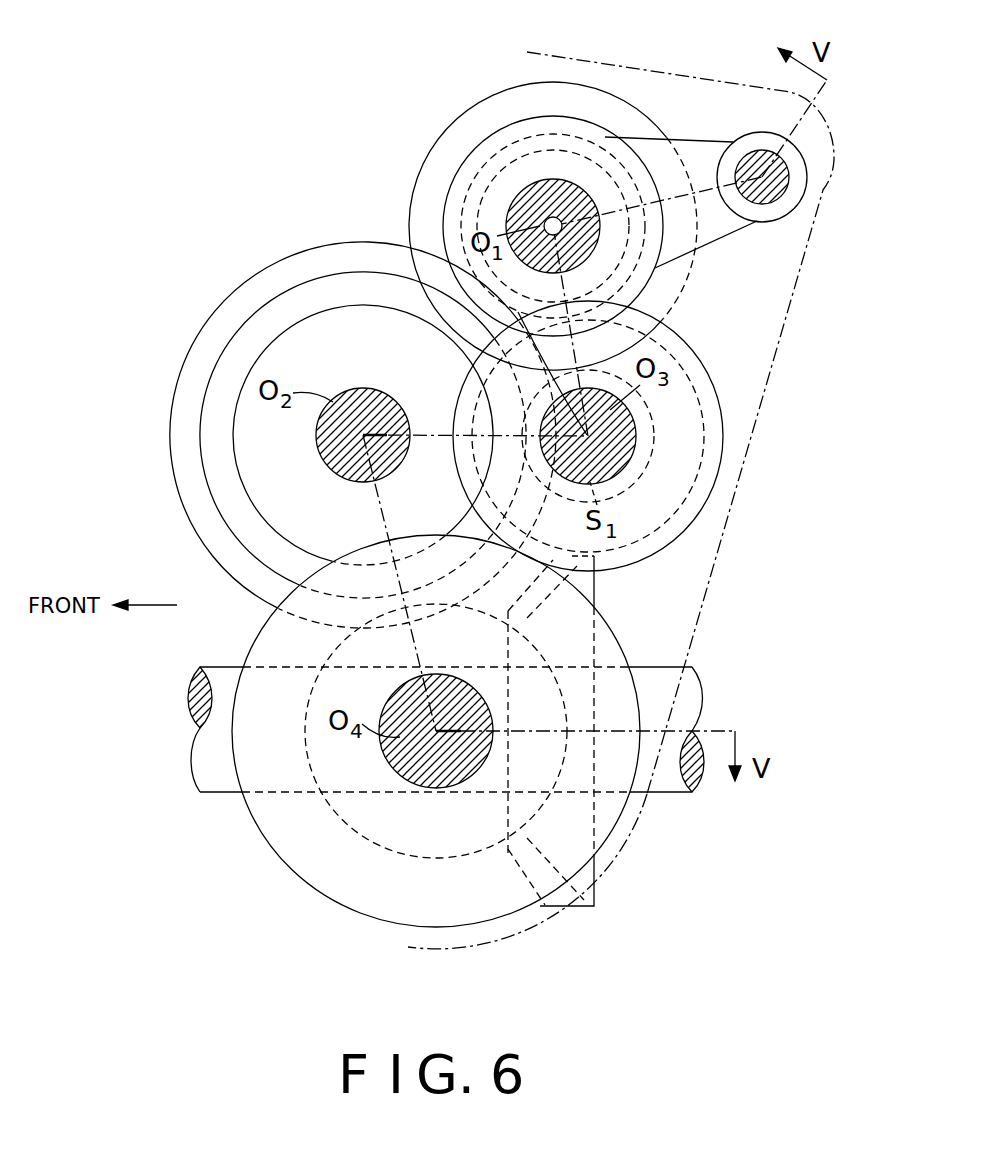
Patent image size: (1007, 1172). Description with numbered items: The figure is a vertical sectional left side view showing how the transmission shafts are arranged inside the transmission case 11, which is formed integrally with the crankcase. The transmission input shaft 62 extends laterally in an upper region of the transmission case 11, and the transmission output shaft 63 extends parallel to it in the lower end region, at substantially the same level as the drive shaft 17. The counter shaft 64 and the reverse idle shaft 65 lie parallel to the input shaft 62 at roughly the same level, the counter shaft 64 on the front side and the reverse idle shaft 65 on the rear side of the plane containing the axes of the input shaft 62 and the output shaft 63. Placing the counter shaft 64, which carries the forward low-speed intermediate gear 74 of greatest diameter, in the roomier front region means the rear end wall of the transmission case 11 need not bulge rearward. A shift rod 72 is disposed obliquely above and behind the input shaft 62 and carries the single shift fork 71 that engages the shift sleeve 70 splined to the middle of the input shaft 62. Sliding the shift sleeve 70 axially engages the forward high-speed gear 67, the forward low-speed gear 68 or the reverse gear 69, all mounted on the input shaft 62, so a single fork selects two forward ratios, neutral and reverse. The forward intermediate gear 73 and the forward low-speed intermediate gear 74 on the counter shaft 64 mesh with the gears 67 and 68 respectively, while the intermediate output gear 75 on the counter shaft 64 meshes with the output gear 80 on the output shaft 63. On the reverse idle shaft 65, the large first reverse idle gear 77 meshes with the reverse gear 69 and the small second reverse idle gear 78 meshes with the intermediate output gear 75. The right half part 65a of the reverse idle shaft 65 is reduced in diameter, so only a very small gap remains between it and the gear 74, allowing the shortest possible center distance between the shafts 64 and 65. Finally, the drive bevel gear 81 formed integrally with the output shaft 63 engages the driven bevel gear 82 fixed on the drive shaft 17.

The transmission case 11 is at (625, 63).
The drive shaft 17 is at (663, 795).
The transmission input shaft 62 is at (522, 210).
The transmission output shaft 63 is at (400, 775).
The counter shaft 64 is at (327, 455).
The reverse idle shaft 65 is at (622, 470).
The right half part of the reverse idle shaft 65a is at (700, 393).
The forward high-speed gear 67 is at (520, 83).
The forward low-speed gear 68 is at (497, 88).
The reverse gear 69 is at (450, 173).
The shift sleeve 70 is at (448, 125).
The shift fork 71 is at (730, 238).
The shift rod 72 is at (776, 191).
The forward intermediate gear 73 is at (227, 338).
The forward low-speed intermediate gear 74 is at (230, 292).
The intermediate output gear 75 is at (318, 310).
The first reverse idle gear 77 is at (722, 484).
The second reverse idle gear 78 is at (712, 438).
The output gear 80 is at (256, 826).
The drive bevel gear 81 is at (379, 846).
The driven bevel gear 82 is at (597, 887).